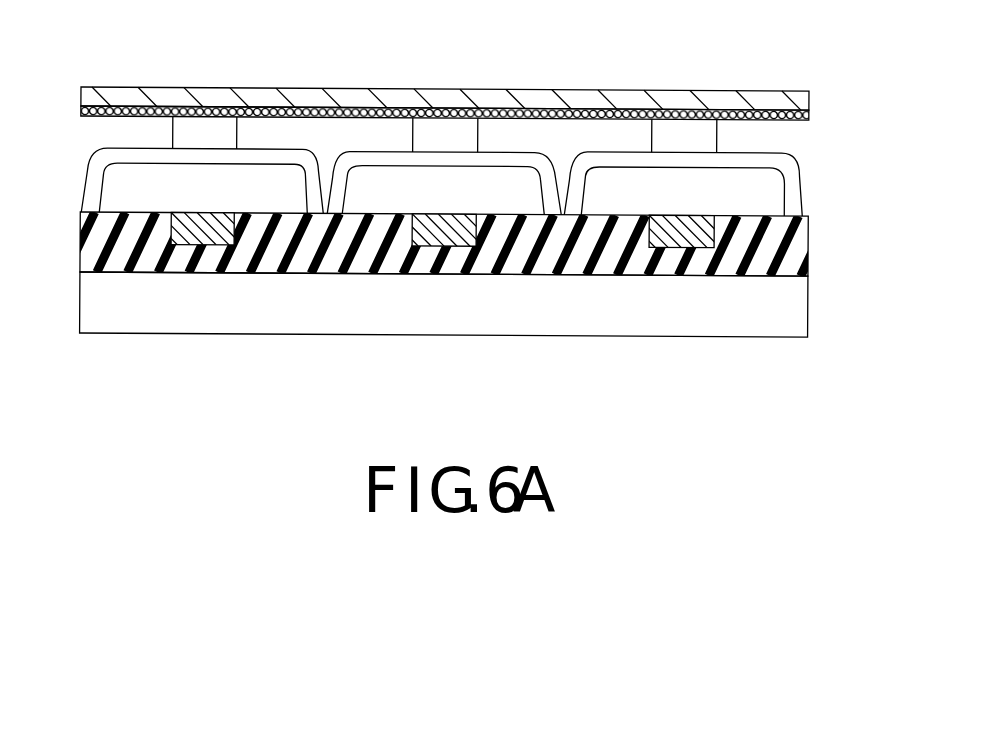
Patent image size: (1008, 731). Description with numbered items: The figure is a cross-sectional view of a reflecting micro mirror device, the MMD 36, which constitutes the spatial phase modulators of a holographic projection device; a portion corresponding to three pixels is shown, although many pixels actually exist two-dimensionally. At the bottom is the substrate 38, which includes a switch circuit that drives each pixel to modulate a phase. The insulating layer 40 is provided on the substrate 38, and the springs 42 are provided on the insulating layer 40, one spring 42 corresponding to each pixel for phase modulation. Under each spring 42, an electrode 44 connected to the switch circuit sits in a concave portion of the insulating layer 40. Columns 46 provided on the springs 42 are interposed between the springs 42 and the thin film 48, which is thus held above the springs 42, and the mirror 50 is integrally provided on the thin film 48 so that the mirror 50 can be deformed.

The MMD 36 is at (660, 58).
The substrate 38 is at (517, 320).
The insulating layer 40 is at (255, 270).
The spring 42 is at (797, 188).
The electrode 44 is at (703, 233).
The column 46 is at (710, 137).
The thin film 48 is at (802, 117).
The mirror 50 is at (802, 106).